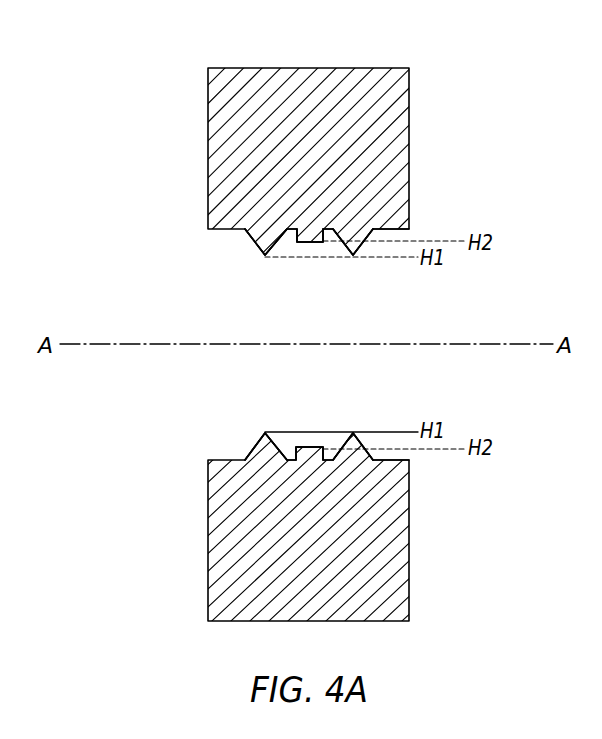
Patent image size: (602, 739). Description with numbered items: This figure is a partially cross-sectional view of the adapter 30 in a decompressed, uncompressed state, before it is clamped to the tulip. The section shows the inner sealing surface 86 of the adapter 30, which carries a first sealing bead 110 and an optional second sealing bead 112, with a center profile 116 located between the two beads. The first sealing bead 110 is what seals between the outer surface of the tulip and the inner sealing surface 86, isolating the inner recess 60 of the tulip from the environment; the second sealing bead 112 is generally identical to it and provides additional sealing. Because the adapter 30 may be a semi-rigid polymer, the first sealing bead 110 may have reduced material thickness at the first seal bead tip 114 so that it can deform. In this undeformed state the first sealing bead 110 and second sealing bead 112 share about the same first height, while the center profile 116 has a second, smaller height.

The adapter 30 is at (454, 58).
The inner recess 60 is at (447, 527).
The first sealing bead 110 is at (256, 246).
The first seal bead tip 114 is at (263, 256).
The center profile 116 is at (307, 243).
The second sealing bead 112 is at (352, 257).
The inner sealing surface 86 is at (388, 231).